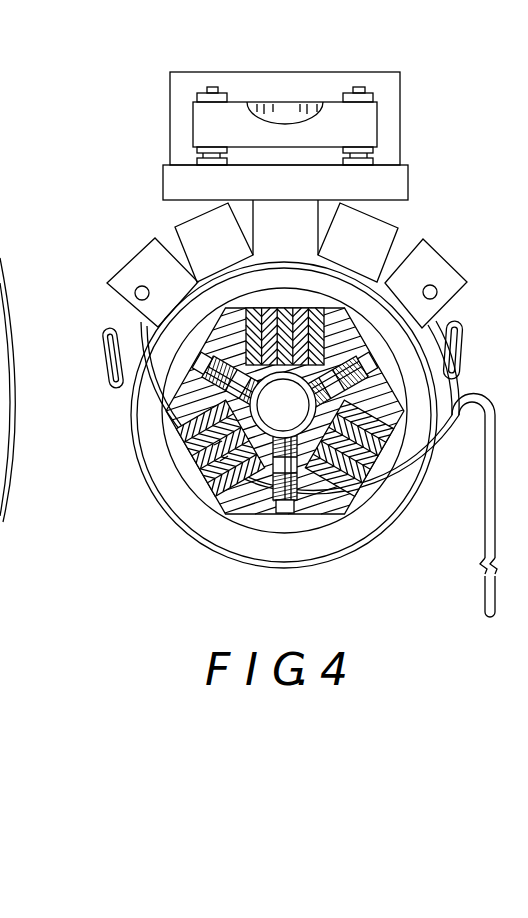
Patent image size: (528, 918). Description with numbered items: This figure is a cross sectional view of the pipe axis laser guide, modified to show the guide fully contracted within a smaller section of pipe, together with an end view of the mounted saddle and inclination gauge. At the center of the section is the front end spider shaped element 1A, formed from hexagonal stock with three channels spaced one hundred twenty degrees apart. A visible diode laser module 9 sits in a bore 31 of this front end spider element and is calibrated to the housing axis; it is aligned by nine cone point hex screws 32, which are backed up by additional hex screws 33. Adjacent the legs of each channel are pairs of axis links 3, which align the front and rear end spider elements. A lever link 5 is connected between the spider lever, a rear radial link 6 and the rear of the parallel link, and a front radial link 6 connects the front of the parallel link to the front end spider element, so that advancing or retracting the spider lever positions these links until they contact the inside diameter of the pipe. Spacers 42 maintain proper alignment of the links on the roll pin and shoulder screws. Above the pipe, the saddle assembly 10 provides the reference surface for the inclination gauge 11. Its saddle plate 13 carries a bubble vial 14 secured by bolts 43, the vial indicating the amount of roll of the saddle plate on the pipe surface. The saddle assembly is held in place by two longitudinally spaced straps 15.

The front end spider shaped element 1A is at (232, 411).
The axis links 3 is at (196, 420).
The lever link 5 is at (204, 438).
The radial link 6 is at (220, 461).
The visible diode laser module 9 is at (283, 405).
The saddle assembly 10 is at (445, 262).
The inclination gauge 11 is at (281, 72).
The saddle plate 13 is at (163, 173).
The bubble vial 14 is at (378, 117).
The straps 15 is at (495, 458).
The bore 31 is at (300, 440).
The cone point hex screws 32 is at (281, 513).
The hex screws 33 is at (282, 440).
The spacers 42 is at (214, 445).
The bolts 43 is at (212, 87).